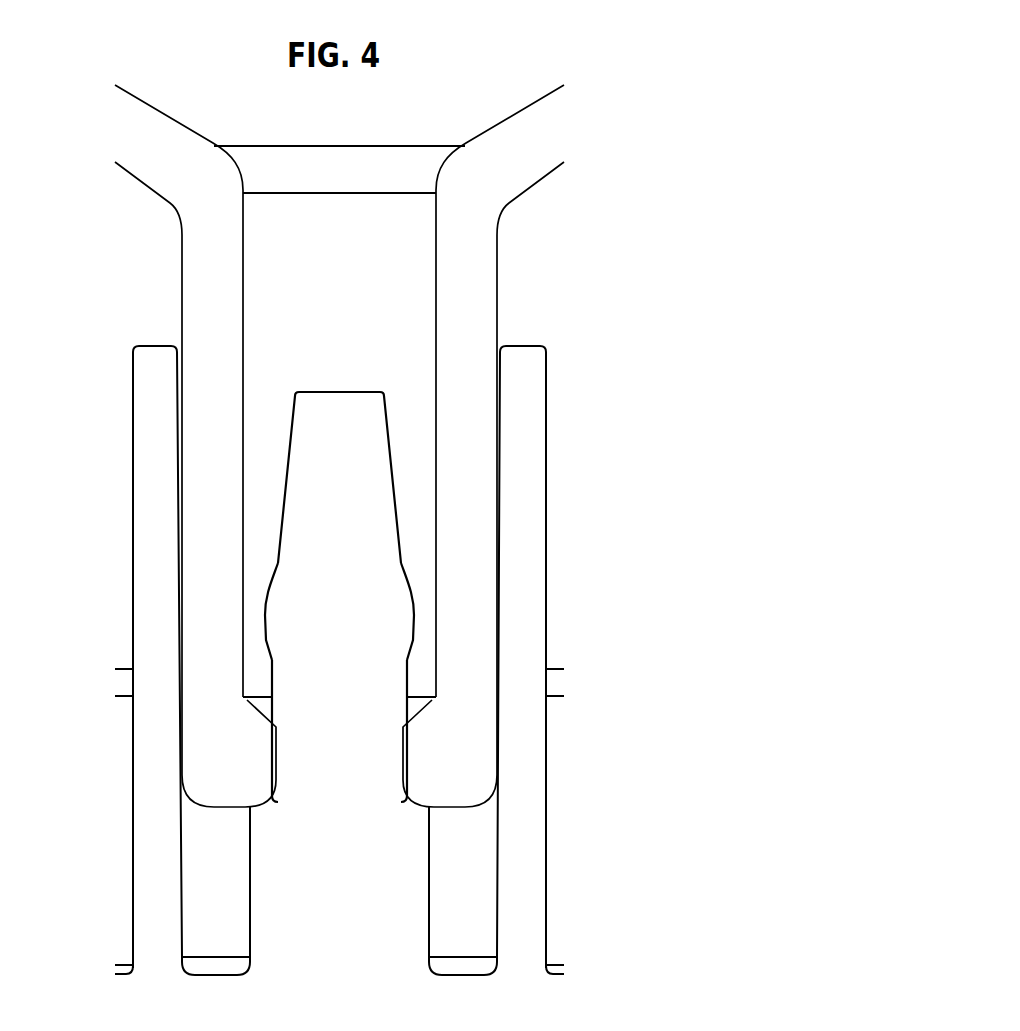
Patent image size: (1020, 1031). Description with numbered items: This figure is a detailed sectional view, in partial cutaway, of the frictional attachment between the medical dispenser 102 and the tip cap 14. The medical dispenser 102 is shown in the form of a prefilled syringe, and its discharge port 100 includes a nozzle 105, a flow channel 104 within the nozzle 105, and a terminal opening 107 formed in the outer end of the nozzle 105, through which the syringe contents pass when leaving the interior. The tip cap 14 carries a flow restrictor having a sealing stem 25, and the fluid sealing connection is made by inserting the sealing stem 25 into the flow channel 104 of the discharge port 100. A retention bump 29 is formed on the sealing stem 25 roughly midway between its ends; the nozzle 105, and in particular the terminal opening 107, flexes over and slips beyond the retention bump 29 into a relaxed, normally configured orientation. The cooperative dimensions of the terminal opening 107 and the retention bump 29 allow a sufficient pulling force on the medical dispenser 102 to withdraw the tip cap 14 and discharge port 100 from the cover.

The tip cap 14 is at (583, 638).
The sealing stem 25 is at (428, 610).
The retention bump 29 is at (410, 588).
The discharge port 100 is at (497, 300).
The medical dispenser 102 is at (545, 147).
The flow channel 104 is at (339, 201).
The nozzle 105 is at (202, 263).
The terminal opening 107 is at (277, 777).